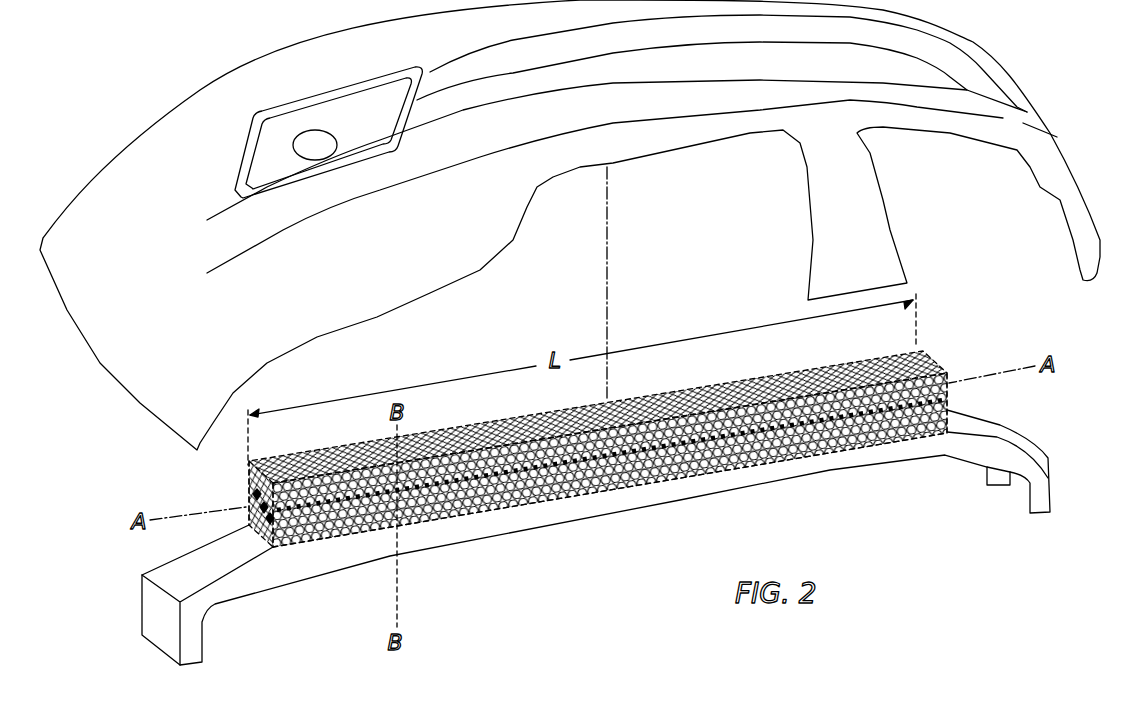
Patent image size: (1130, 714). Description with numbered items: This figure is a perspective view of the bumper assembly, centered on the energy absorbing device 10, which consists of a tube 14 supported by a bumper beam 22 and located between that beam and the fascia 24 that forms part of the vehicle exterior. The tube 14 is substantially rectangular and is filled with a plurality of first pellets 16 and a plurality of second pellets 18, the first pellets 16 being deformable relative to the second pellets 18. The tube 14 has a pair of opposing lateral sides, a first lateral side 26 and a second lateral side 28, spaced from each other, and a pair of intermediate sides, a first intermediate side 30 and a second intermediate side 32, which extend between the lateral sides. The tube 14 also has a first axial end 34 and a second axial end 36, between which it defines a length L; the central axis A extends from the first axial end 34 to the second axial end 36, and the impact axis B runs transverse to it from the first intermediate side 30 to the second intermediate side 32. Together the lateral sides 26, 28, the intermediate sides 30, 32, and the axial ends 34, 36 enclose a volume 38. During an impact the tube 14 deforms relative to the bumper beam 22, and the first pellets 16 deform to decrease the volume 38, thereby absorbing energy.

The energy absorbing device 10 is at (600, 484).
The tube 14 is at (953, 369).
The first pellets 16 is at (250, 496).
The second pellets 18 is at (247, 464).
The bumper beam 22 is at (1022, 437).
The fascia 24 is at (174, 114).
The first lateral side 26 is at (245, 477).
The second lateral side 28 is at (300, 548).
The first intermediate side 30 is at (448, 427).
The second intermediate side 32 is at (472, 520).
The first axial end 34 is at (263, 540).
The second axial end 36 is at (949, 387).
The volume 38 is at (707, 398).